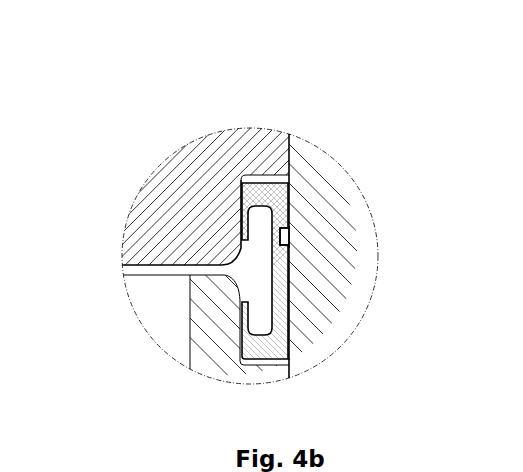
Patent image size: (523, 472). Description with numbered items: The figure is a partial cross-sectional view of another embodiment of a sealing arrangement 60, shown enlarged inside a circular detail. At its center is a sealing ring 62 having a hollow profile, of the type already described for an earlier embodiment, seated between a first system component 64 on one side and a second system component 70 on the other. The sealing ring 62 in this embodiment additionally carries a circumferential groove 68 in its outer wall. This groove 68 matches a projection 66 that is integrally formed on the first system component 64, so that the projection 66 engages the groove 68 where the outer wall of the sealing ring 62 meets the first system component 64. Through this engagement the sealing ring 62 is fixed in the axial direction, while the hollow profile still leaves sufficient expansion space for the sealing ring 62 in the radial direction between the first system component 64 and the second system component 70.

The sealing arrangement 60 is at (112, 167).
The sealing ring 62 is at (256, 178).
The first system component 64 is at (310, 295).
The projection 66 is at (290, 235).
The groove 68 is at (290, 240).
The second system component 70 is at (162, 173).